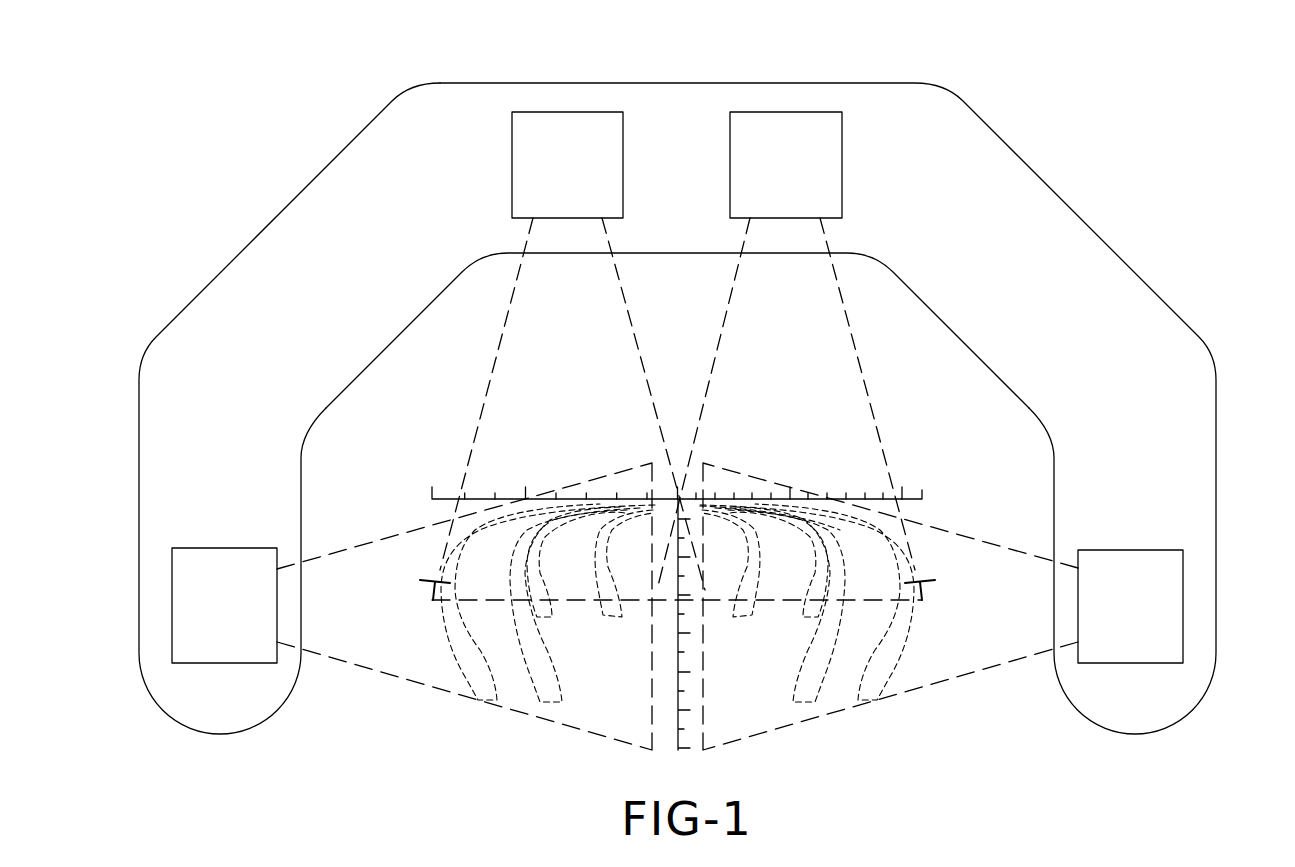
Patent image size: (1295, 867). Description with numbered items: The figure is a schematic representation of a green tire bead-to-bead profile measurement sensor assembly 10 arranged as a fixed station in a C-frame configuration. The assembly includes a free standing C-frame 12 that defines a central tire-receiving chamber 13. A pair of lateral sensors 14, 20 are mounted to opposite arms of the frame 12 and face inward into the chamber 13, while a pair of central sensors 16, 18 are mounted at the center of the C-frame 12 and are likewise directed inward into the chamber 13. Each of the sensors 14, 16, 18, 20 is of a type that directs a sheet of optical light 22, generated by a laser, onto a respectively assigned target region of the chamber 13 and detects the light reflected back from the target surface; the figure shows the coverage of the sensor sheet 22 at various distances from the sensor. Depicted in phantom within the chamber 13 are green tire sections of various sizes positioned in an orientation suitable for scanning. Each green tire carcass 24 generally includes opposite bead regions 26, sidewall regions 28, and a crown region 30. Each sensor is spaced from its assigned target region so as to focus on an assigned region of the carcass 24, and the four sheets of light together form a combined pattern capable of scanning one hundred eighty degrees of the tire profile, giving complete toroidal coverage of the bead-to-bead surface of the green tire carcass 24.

The sensor assembly 10 is at (200, 152).
The C-frame 12 is at (1118, 307).
The tire-receiving chamber 13 is at (441, 472).
The lateral sensor 14 is at (1131, 604).
The central sensor 16 is at (780, 138).
The central sensor 18 is at (562, 138).
The lateral sensor 20 is at (224, 604).
The sheet of optical light 22 is at (792, 322).
The green tire carcass 24 is at (907, 670).
The bead regions 26 is at (467, 680).
The sidewall regions 28 is at (432, 578).
The crown region 30 is at (835, 517).